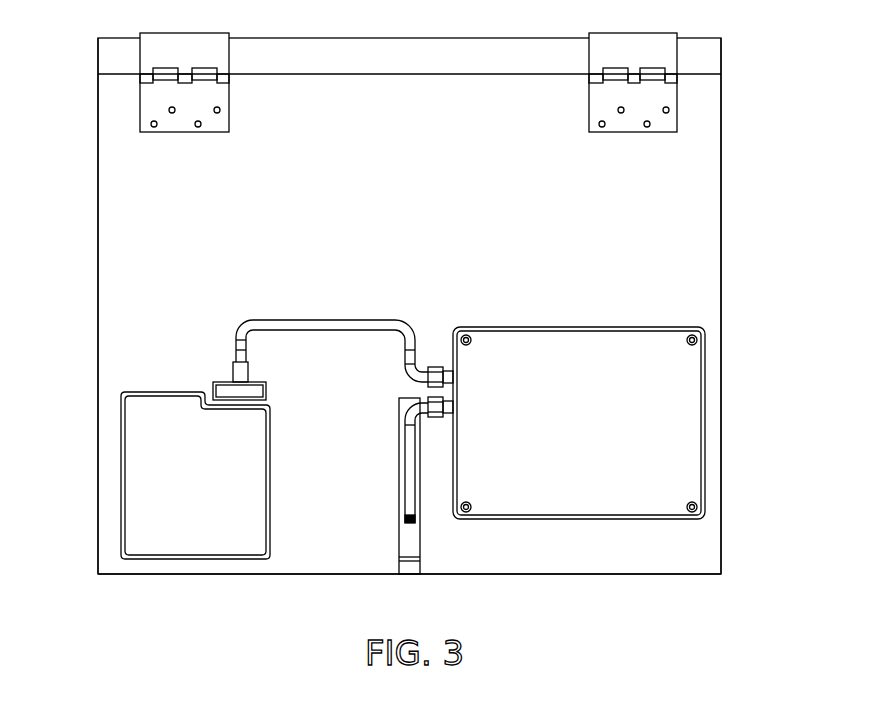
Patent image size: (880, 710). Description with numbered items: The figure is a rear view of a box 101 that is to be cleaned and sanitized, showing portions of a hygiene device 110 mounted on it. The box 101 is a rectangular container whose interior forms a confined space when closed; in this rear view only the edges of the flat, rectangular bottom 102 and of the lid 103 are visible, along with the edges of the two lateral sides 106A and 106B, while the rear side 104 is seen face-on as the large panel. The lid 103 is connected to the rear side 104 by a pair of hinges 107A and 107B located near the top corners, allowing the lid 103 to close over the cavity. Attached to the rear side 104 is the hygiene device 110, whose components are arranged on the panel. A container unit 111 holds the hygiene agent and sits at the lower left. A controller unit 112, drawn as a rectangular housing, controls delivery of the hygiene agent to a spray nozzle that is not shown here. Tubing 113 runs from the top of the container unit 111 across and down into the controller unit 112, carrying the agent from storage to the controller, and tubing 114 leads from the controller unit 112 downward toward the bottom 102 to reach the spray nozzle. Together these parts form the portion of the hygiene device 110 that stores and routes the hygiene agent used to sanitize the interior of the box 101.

The box 101 is at (413, 36).
The bottom 102 is at (555, 574).
The lid 103 is at (703, 55).
The rear side 104 is at (693, 248).
The lateral side 106A is at (722, 177).
The lateral side 106B is at (97, 178).
The hinge 107A is at (630, 43).
The hinge 107B is at (180, 43).
The hygiene device 110 is at (582, 324).
The container unit 111 is at (148, 487).
The controller unit 112 is at (672, 427).
The tubing 113 is at (325, 318).
The tubing 114 is at (407, 465).